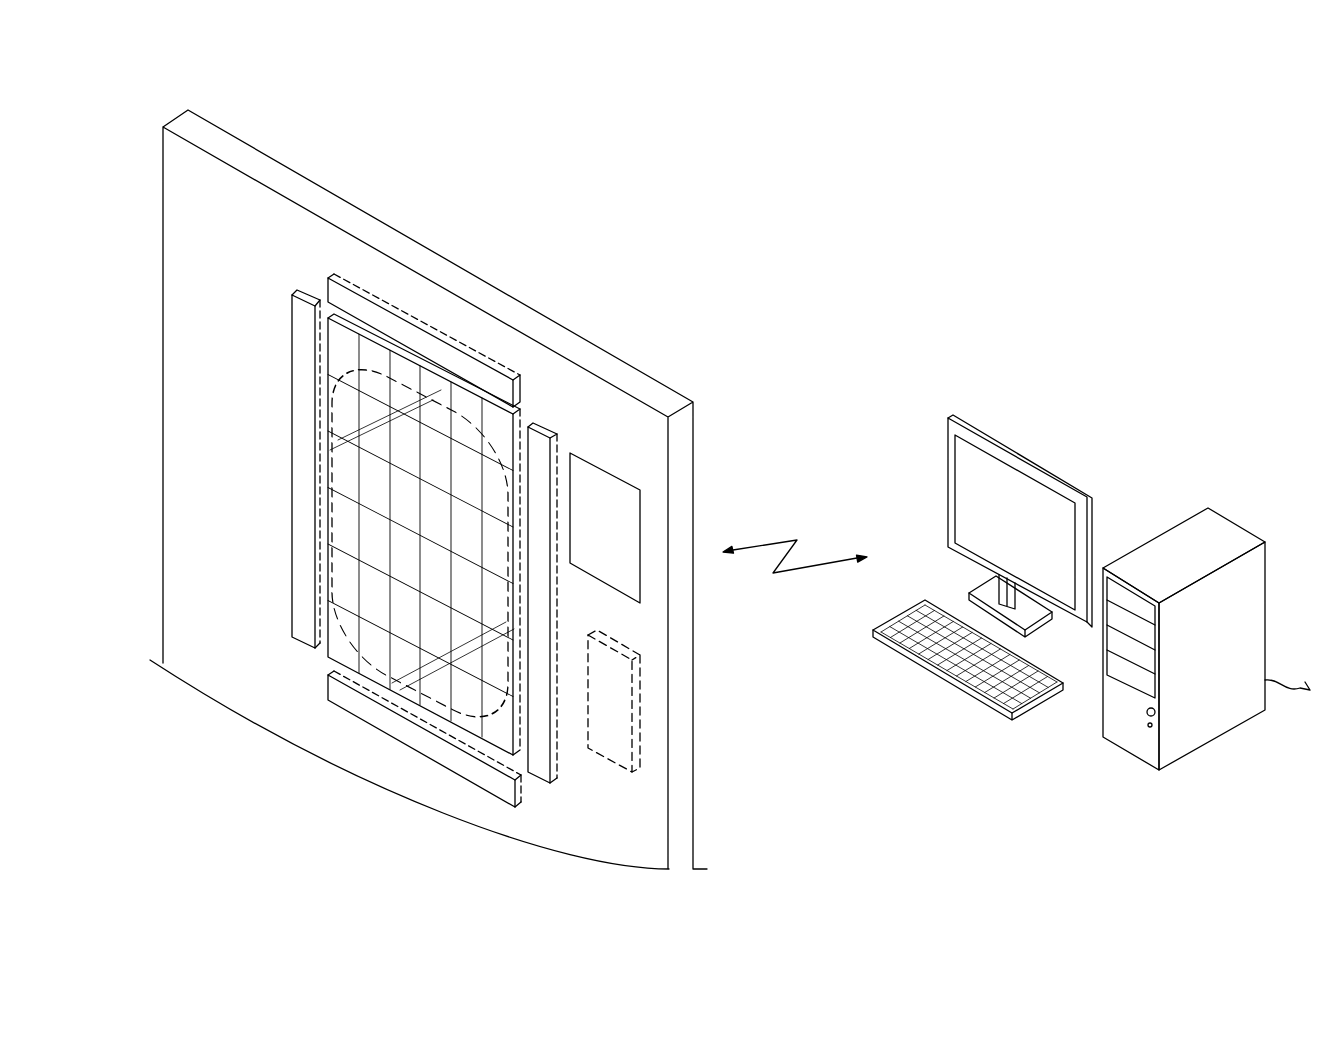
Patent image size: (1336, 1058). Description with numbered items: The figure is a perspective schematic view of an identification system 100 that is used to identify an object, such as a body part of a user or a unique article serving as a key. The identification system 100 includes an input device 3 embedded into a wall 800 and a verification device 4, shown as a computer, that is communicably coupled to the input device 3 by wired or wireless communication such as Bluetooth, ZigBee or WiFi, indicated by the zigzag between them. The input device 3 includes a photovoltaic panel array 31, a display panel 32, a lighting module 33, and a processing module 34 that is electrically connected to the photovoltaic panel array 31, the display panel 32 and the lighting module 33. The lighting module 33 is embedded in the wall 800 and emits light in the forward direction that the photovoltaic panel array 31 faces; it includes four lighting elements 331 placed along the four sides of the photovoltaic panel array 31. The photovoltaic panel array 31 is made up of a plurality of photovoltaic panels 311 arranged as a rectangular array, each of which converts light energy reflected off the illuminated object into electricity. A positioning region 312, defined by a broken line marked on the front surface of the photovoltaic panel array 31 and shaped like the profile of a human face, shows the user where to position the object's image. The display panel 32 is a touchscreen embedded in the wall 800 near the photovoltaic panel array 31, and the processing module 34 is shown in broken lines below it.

The identification system 100 is at (1072, 194).
The wall 800 is at (195, 318).
The input device 3 is at (412, 297).
The photovoltaic panel array 31 is at (361, 511).
The photovoltaic panels 311 is at (463, 477).
The positioning region 312 is at (345, 423).
The display panel 32 is at (623, 495).
The lighting module 33 is at (357, 290).
The lighting elements 331 is at (327, 292).
The processing module 34 is at (615, 697).
The verification device 4 is at (1153, 540).